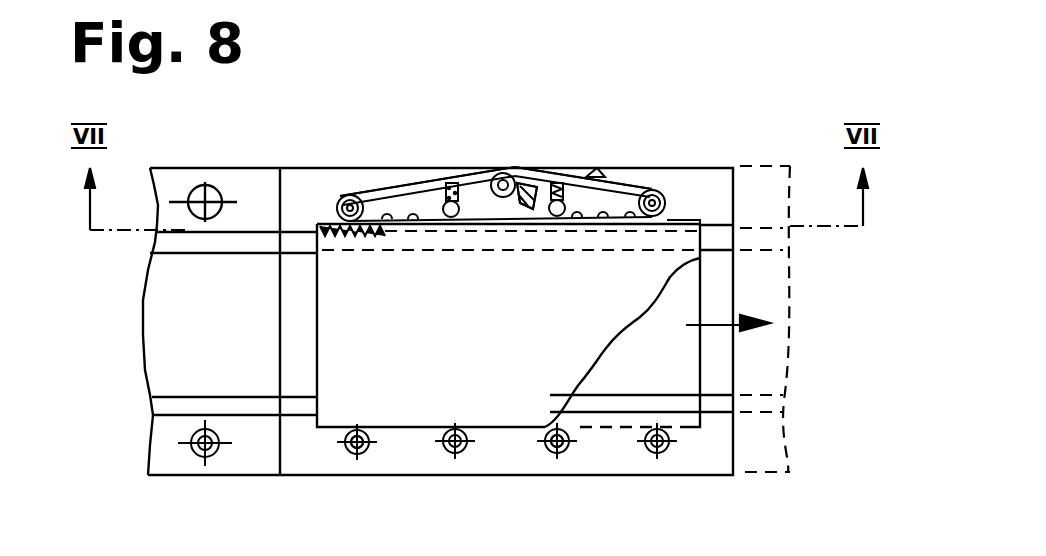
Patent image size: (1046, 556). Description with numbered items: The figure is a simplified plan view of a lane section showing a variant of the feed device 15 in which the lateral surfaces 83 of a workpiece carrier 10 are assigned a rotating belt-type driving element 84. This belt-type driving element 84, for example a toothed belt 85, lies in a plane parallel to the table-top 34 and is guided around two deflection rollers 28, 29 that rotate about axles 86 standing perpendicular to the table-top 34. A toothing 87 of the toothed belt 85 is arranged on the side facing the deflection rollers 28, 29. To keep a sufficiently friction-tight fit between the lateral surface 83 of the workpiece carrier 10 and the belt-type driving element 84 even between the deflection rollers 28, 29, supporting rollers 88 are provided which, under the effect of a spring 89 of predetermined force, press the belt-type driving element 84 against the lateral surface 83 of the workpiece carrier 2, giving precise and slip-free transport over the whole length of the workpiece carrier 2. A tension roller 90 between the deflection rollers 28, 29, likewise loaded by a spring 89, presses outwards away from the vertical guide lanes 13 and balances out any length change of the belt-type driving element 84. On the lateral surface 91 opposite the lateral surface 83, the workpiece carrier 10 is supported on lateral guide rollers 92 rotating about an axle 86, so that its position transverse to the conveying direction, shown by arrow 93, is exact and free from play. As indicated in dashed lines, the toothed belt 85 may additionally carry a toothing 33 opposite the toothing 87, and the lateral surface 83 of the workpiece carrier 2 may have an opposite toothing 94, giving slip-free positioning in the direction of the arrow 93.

The workpiece carrier 2 is at (345, 335).
The workpiece carrier 10 is at (677, 263).
The vertical guide lanes 13 is at (733, 227).
The feed device 15 is at (372, 143).
The deflection roller 28 is at (660, 190).
The deflection roller 29 is at (343, 194).
The toothing 33 is at (607, 170).
The table-top 34 is at (720, 207).
The lateral surface 83 is at (698, 220).
The belt-type driving element 84 is at (355, 178).
The toothed belt 85 is at (525, 183).
The axle 86 is at (645, 193).
The toothing 87 is at (413, 212).
The supporting rollers 88 is at (452, 230).
The spring 89 is at (455, 182).
The tension roller 90 is at (497, 175).
The lateral surface 91 is at (498, 430).
The lateral guide rollers 92 is at (365, 456).
The arrow 93 is at (707, 327).
The opposite toothing 94 is at (333, 222).